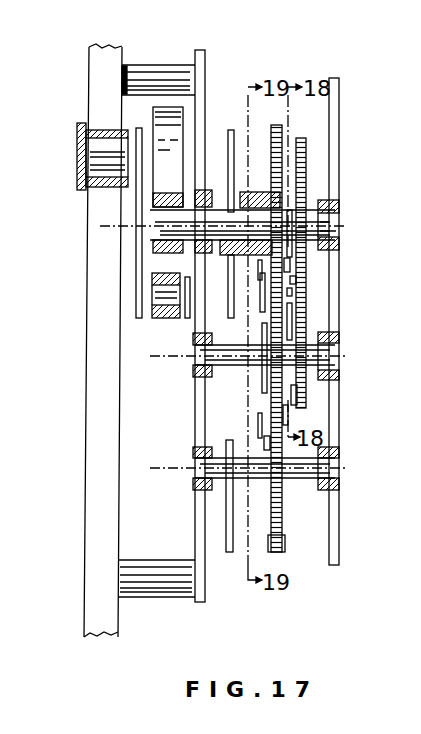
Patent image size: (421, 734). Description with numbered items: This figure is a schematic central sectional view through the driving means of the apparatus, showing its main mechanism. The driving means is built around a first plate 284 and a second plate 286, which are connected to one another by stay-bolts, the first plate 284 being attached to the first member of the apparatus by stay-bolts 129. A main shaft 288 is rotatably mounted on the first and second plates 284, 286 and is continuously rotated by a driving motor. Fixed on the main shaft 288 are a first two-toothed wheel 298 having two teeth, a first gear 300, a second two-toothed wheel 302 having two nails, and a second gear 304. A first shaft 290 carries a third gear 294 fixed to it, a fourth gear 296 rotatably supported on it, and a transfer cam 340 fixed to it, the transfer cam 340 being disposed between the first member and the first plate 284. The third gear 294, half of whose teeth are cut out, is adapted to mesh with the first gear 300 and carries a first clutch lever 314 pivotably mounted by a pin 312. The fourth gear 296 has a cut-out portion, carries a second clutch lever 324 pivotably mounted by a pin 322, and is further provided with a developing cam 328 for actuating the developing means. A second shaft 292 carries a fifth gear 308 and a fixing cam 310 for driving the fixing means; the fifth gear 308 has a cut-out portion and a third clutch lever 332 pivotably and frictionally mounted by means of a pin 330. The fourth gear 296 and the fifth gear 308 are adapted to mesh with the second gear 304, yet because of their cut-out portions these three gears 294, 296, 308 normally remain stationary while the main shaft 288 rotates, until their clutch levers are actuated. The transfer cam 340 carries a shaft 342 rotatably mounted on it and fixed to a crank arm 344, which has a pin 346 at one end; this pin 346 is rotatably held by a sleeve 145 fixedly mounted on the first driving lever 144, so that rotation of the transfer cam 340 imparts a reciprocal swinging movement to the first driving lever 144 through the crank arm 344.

The stay-bolts 129 is at (158, 62).
The first plate 284 is at (203, 54).
The transfer cam 340 is at (170, 125).
The developing cam 328 is at (230, 136).
The fourth gear 296 is at (281, 140).
The second plate 286 is at (340, 117).
The third gear 294 is at (306, 165).
The first driving lever 144 is at (78, 125).
The sleeve 145 is at (80, 152).
The pin 346 is at (97, 150).
The crank arm 344 is at (140, 231).
The first shaft 290 is at (250, 200).
The shaft 342 is at (152, 320).
The pin 312 is at (300, 268).
The first clutch lever 314 is at (294, 280).
The pin 322 is at (290, 292).
The second clutch lever 324 is at (292, 300).
The second two-toothed wheel 302 is at (263, 333).
The main shaft 288 is at (212, 380).
The second gear 304 is at (337, 383).
The first gear 300 is at (304, 402).
The first two-toothed wheel 298 is at (285, 416).
The pin 330 is at (262, 421).
The third clutch lever 332 is at (266, 441).
The second shaft 292 is at (214, 493).
The fixing cam 310 is at (229, 550).
The fifth gear 308 is at (283, 540).